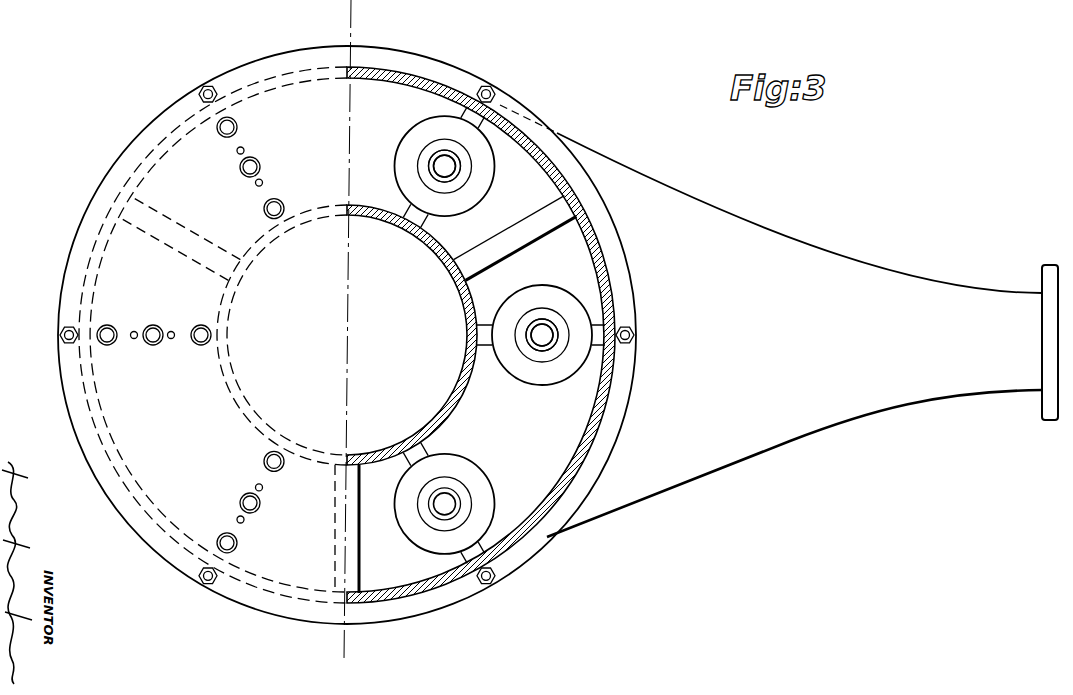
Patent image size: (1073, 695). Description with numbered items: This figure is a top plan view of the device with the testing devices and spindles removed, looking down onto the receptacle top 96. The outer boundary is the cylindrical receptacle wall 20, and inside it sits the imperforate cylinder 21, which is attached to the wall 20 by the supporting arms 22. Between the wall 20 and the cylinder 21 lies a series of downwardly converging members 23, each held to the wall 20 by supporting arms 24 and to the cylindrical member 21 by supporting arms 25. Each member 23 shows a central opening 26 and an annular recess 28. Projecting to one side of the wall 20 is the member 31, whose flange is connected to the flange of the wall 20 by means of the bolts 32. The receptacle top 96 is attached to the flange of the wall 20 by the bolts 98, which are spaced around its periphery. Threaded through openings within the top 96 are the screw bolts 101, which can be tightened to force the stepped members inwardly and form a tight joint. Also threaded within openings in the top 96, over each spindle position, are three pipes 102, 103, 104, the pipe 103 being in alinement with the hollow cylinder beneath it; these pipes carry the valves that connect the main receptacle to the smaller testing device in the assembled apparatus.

The cylindrical receptacle wall 20 is at (400, 73).
The imperforate cylinder 21 is at (232, 328).
The supporting arms 22 is at (190, 232).
The downwardly converging members 23 is at (412, 146).
The supporting arms 24 is at (468, 114).
The supporting arms 25 is at (428, 222).
The central opening 26 is at (434, 164).
The annular recess 28 is at (432, 170).
The member 31 is at (882, 275).
The bolts 32 is at (636, 337).
The receptacle top 96 is at (80, 226).
The bolts 98 is at (207, 86).
The screw bolts 101 is at (170, 340).
The pipe 102 is at (110, 324).
The pipe 103 is at (153, 322).
The pipe 104 is at (197, 323).